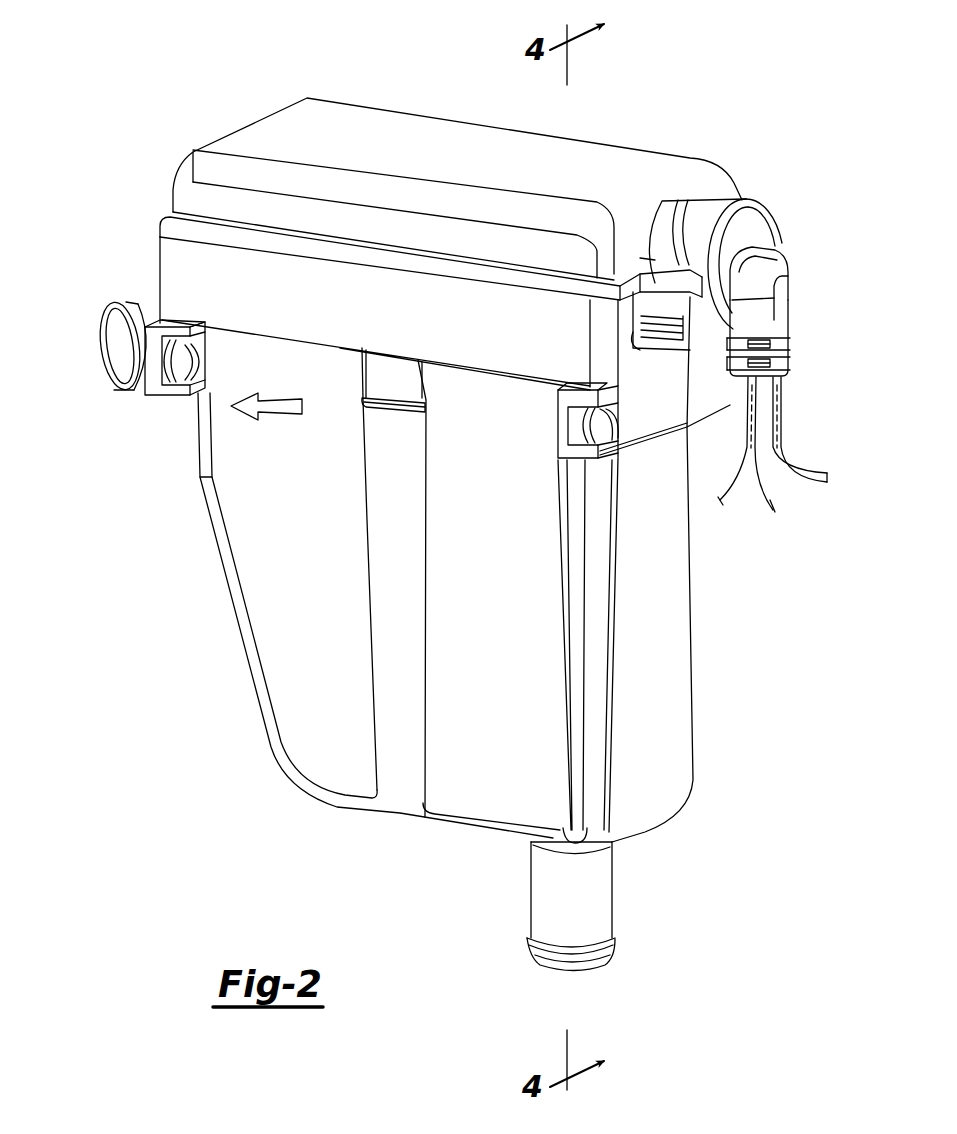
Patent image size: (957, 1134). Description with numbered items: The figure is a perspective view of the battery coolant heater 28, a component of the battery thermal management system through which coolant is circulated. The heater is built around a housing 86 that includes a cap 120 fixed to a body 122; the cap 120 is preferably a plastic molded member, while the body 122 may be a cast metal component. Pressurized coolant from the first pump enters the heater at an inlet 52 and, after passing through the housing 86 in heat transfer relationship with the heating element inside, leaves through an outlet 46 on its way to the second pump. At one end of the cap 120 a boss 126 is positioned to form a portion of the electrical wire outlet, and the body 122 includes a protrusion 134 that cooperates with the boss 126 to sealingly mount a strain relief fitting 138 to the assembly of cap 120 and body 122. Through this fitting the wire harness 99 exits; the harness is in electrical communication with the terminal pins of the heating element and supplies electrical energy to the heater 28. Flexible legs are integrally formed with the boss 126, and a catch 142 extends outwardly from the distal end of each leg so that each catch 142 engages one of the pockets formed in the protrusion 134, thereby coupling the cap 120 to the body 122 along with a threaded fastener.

The coolant heater 28 is at (370, 68).
The cap 120 is at (282, 130).
The housing 86 is at (155, 270).
The outlet 46 is at (100, 343).
The body 122 is at (248, 528).
The catch 142 is at (640, 318).
The inlet 52 is at (587, 971).
The boss 126 is at (708, 210).
The strain relief fitting 138 is at (770, 260).
The protrusion 134 is at (705, 333).
The wire harness 99 is at (792, 455).